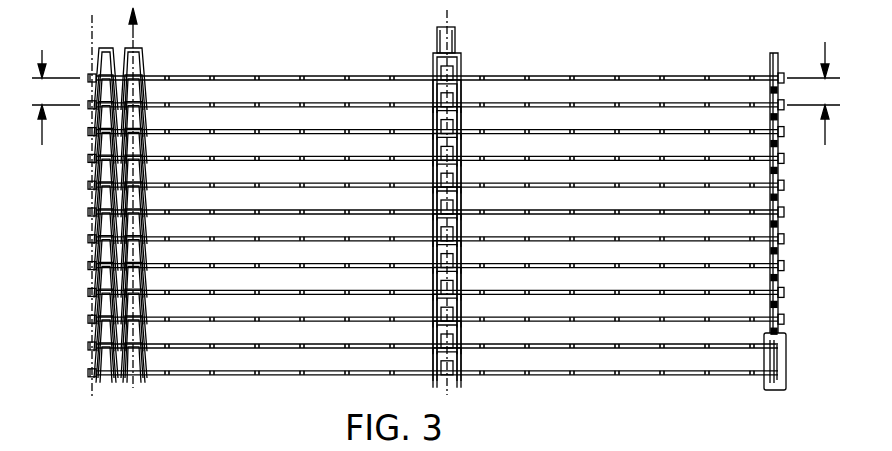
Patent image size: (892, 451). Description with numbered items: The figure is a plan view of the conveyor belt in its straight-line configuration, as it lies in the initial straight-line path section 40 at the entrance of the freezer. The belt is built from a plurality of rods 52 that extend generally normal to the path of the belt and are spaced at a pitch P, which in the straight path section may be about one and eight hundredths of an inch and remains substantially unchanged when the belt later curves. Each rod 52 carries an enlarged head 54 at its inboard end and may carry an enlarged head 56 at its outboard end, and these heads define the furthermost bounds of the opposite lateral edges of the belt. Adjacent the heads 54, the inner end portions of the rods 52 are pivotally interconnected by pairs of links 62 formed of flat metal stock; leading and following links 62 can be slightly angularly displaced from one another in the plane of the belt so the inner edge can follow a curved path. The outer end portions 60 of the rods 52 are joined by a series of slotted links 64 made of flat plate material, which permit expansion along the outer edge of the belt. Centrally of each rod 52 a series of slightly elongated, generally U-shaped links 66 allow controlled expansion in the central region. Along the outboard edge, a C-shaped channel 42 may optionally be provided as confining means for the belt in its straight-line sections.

The initial straight-line path section 40 is at (436, 218).
The C-shaped channel 42 is at (788, 350).
The rods 52 is at (352, 76).
The enlarged head 54 is at (89, 347).
The enlarged head 56 is at (784, 275).
The outer end portions 60 is at (766, 70).
The links 62 is at (137, 46).
The slotted links 64 is at (780, 248).
The U-shaped links 66 is at (457, 45).